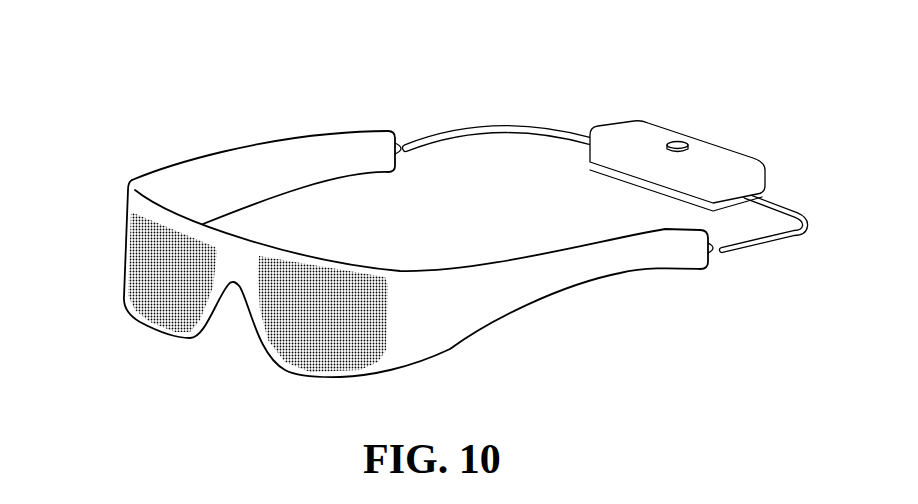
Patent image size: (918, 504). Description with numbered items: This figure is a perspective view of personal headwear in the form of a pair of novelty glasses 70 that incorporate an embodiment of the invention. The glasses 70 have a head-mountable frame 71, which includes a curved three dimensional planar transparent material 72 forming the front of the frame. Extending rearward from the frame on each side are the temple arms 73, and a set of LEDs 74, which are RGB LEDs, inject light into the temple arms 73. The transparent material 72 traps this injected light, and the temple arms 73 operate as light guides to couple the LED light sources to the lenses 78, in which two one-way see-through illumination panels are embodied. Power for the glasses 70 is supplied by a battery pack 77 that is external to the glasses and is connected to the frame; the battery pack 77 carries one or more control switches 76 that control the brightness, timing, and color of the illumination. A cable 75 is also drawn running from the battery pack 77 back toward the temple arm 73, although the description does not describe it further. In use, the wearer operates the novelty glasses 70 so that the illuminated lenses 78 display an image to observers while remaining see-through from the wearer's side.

The novelty glasses 70 is at (450, 241).
The head-mountable frame 71 is at (128, 310).
The curved three dimensional planar transparent material 72 is at (390, 268).
The temple arms 73 is at (268, 167).
The LEDs 74 is at (405, 150).
The cable 75 is at (782, 233).
The control switches 76 is at (681, 141).
The battery pack 77 is at (607, 145).
The lenses 78 is at (180, 310).